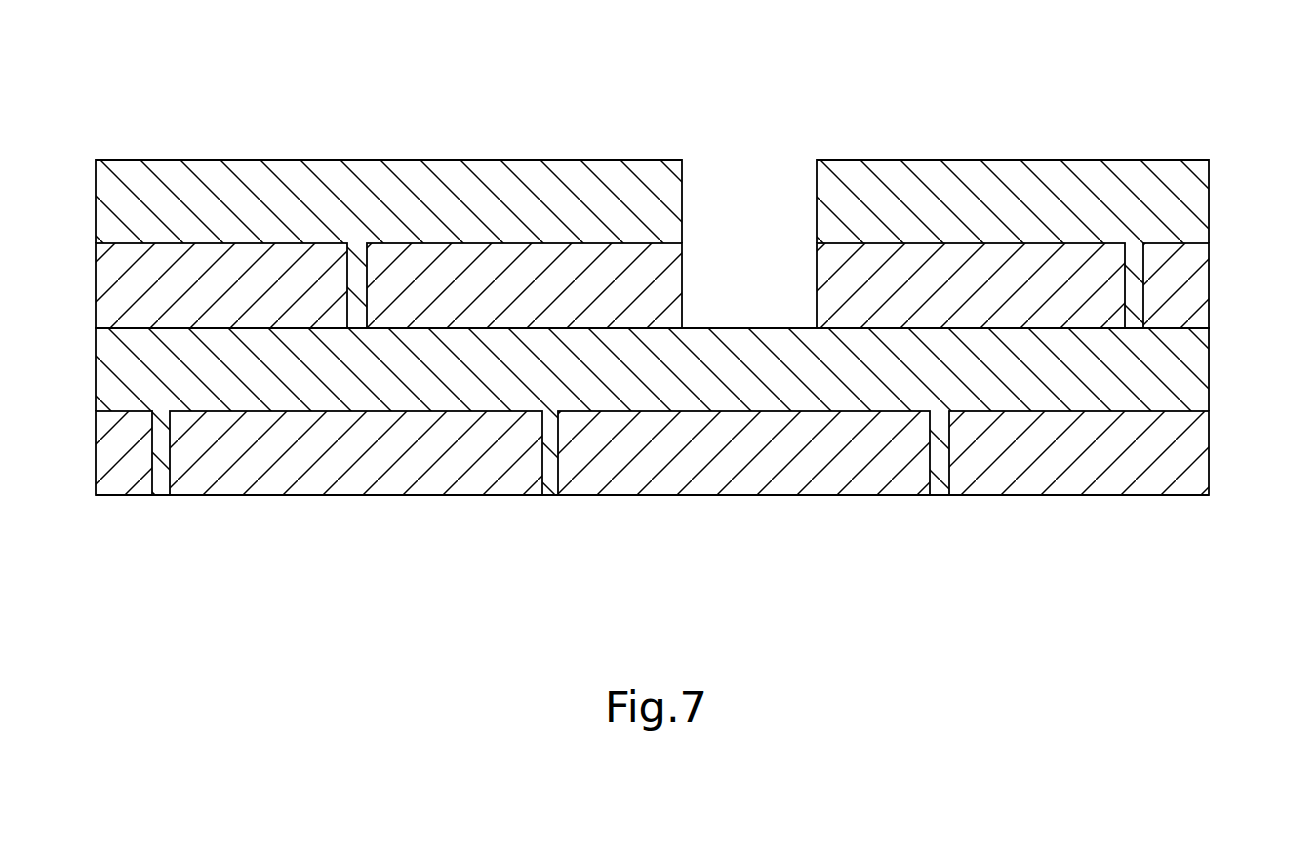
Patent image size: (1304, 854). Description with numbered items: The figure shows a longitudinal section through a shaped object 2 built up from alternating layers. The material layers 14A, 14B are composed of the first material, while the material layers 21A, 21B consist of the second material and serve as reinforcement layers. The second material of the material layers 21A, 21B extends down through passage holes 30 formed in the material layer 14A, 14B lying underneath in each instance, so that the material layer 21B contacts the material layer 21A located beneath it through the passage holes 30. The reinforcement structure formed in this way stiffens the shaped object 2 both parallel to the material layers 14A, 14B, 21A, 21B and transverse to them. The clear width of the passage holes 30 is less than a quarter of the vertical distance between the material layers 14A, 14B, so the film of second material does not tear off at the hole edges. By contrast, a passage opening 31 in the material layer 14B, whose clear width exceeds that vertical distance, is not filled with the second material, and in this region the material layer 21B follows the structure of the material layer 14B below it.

The shaped object 2 is at (652, 378).
The material layer 14A is at (146, 465).
The material layer 14B is at (198, 298).
The material layer 21A is at (624, 381).
The material layer 21B is at (364, 213).
The passage hole 30 is at (357, 278).
The passage opening 31 is at (733, 298).